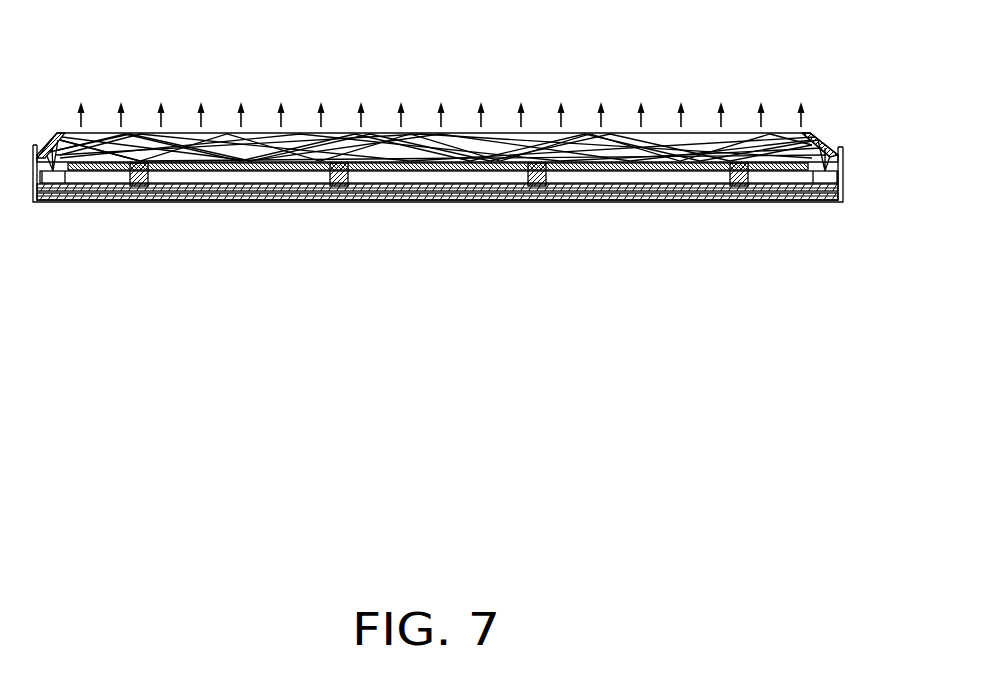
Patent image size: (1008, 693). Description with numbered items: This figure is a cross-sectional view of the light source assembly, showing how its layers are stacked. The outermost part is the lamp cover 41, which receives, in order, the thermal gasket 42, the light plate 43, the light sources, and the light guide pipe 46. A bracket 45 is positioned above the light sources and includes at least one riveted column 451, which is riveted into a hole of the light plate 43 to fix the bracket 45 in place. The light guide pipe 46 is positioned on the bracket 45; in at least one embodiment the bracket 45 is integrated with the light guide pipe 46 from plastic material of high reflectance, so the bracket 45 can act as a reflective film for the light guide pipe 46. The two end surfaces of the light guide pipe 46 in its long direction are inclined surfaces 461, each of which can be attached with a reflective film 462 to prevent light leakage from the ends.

The lamp cover 41 is at (232, 197).
The thermal gasket 42 is at (403, 190).
The light plate 43 is at (603, 188).
The bracket 45 is at (769, 176).
The riveted column 451 is at (532, 188).
The light guide pipe 46 is at (780, 133).
The inclined surface 461 is at (813, 135).
The reflective film 462 is at (822, 148).